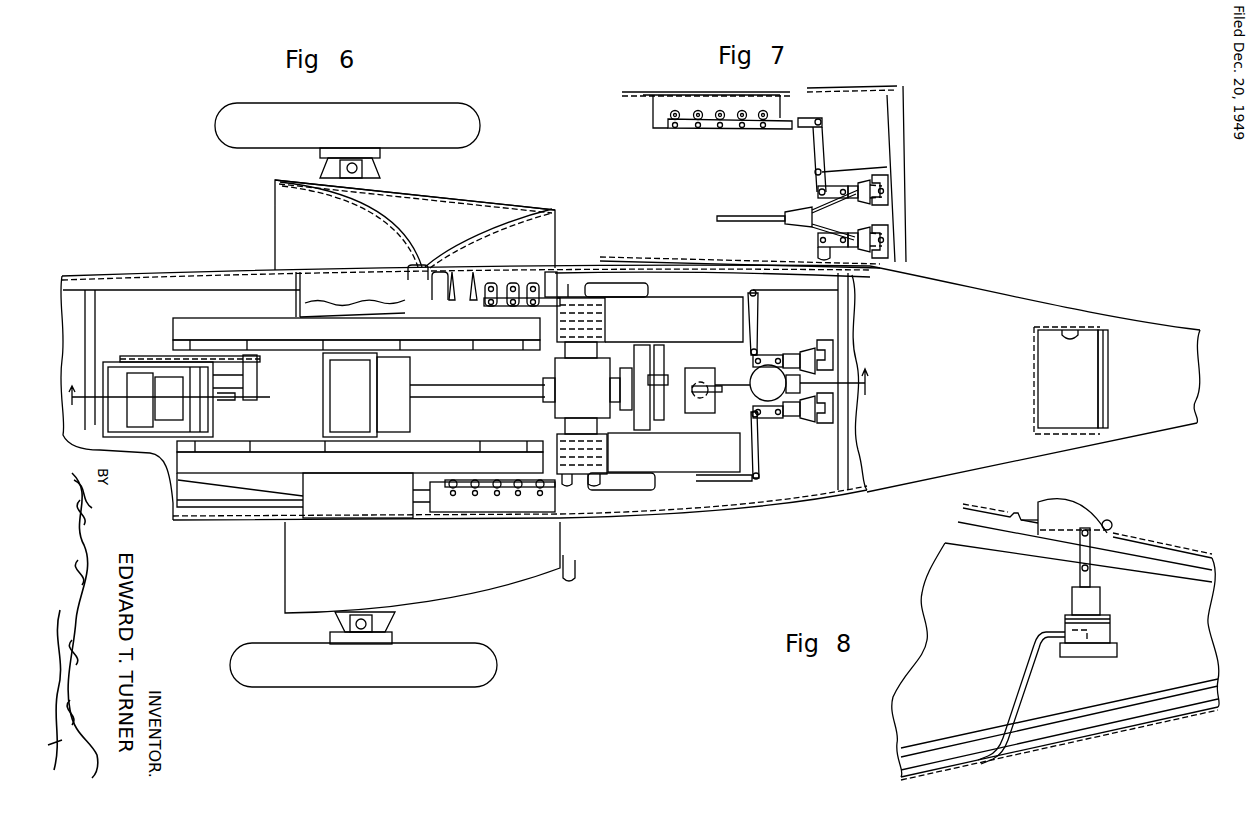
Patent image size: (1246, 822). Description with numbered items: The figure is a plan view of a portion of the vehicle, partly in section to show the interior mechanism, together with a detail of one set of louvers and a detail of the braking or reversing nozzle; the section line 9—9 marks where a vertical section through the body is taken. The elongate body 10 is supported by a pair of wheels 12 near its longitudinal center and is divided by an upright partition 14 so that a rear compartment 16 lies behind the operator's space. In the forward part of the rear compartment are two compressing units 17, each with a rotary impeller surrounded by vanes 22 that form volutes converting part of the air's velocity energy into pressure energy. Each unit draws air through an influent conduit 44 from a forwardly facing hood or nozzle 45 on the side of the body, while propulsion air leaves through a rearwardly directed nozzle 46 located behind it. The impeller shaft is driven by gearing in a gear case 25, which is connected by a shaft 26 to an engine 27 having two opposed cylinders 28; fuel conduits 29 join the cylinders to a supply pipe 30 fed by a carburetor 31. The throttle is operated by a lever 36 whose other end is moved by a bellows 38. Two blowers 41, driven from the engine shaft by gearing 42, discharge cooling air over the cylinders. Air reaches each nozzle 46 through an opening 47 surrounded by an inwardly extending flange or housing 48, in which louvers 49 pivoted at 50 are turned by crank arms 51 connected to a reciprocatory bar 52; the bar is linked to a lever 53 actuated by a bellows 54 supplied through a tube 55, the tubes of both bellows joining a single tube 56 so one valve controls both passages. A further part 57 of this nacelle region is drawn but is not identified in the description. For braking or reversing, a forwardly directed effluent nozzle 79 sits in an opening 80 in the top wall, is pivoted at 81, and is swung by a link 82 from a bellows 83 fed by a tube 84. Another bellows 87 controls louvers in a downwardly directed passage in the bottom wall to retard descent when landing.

In FIG. 6, the section line 9— 9 is at (463, 381).
In FIG. 6, the elongate body 10 is at (591, 520).
In FIG. 7, the elongate body 10 is at (660, 70).
In FIG. 8, the elongate body 10 is at (975, 511).
In FIG. 6, the pair of wheels 12 is at (365, 106).
In FIG. 6, the upright partition 14 is at (97, 322).
In FIG. 6, the rear compartment 16 is at (175, 300).
In FIG. 6, the compressing units 17 is at (303, 330).
In FIG. 6, the vanes 22 is at (484, 343).
In FIG. 6, the gear case 25 is at (400, 376).
In FIG. 6, the shaft 26 is at (458, 398).
In FIG. 6, the engine 27 is at (553, 403).
In FIG. 6, the opposed cylinders 28 is at (592, 355).
In FIG. 6, the fuel conduits 29 is at (621, 288).
In FIG. 6, the supply pipe 30 is at (730, 380).
In FIG. 6, the carburetor 31 is at (773, 400).
In FIG. 6, the lever 36 is at (712, 398).
In FIG. 6, the bellows 38 is at (698, 414).
In FIG. 6, the blowers 41 is at (686, 312).
In FIG. 6, the gearing 42 is at (663, 383).
In FIG. 6, the influent conduit 44 is at (300, 296).
In FIG. 6, the hood or nozzle 45 is at (300, 197).
In FIG. 6, the rearwardly directed nozzles 46 is at (522, 216).
In FIG. 6, the opening 47 is at (430, 267).
In FIG. 6, the flange or housing 48 is at (549, 283).
In FIG. 7, the flange or housing 48 is at (653, 117).
In FIG. 6, the louvers 49 is at (483, 305).
In FIG. 6, the pivot 50 is at (450, 292).
In FIG. 6, the crank arms 51 is at (493, 284).
In FIG. 7, the crank arms 51 is at (738, 113).
In FIG. 6, the reciprocatory bar 52 is at (505, 308).
In FIG. 7, the reciprocatory bar 52 is at (757, 131).
In FIG. 6, the lever 53 is at (752, 312).
In FIG. 7, the lever 53 is at (824, 148).
In FIG. 6, the bellows 54 is at (804, 354).
In FIG. 7, the bellows 54 is at (857, 184).
In FIG. 6, the conduit or tube 55 is at (830, 352).
In FIG. 7, the conduit or tube 55 is at (828, 232).
In FIG. 7, the single tube 56 is at (735, 214).
In FIG. 6, the fairing 57 is at (435, 181).
In FIG. 6, the forwardly directed effluent nozzle 79 is at (1055, 400).
In FIG. 8, the forwardly directed effluent nozzle 79 is at (1082, 509).
In FIG. 6, the opening 80 is at (1071, 337).
In FIG. 8, the opening 80 is at (1034, 521).
In FIG. 8, the pivot 81 is at (1113, 530).
In FIG. 8, the link 82 is at (1083, 553).
In FIG. 8, the bellows 83 is at (1092, 600).
In FIG. 8, the tube 84 is at (1025, 688).
In FIG. 6, the bellows 87 is at (205, 402).